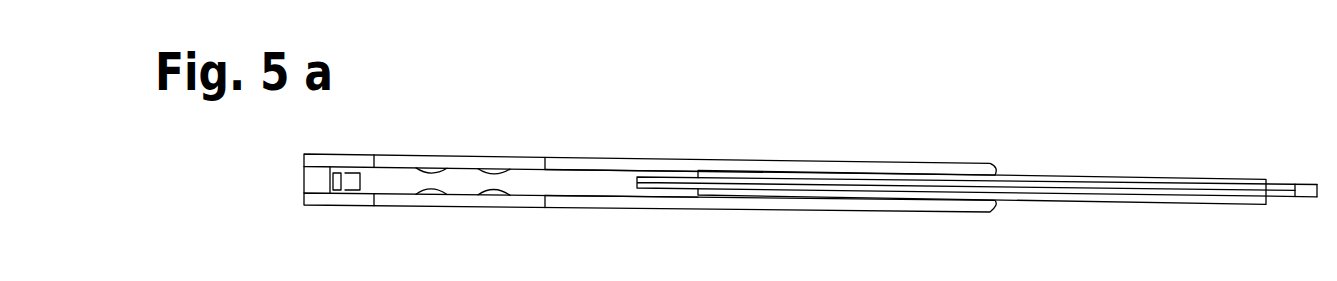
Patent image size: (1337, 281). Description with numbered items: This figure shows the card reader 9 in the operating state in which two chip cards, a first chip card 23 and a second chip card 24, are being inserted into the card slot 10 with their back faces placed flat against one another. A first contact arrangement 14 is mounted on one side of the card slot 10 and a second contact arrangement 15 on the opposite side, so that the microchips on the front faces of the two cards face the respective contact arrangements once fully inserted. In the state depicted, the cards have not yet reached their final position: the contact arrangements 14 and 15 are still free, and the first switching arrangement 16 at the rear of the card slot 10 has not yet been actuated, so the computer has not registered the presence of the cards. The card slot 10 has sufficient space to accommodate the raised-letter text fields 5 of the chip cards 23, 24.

The card reader 9 is at (899, 208).
The card slot 10 is at (600, 181).
The first contact arrangement 14 is at (460, 165).
The second contact arrangement 15 is at (460, 197).
The first switching arrangement 16 is at (337, 203).
The raised-letter text fields 5 is at (1185, 177).
The first chip card 23 is at (1293, 183).
The second chip card 24 is at (1293, 199).